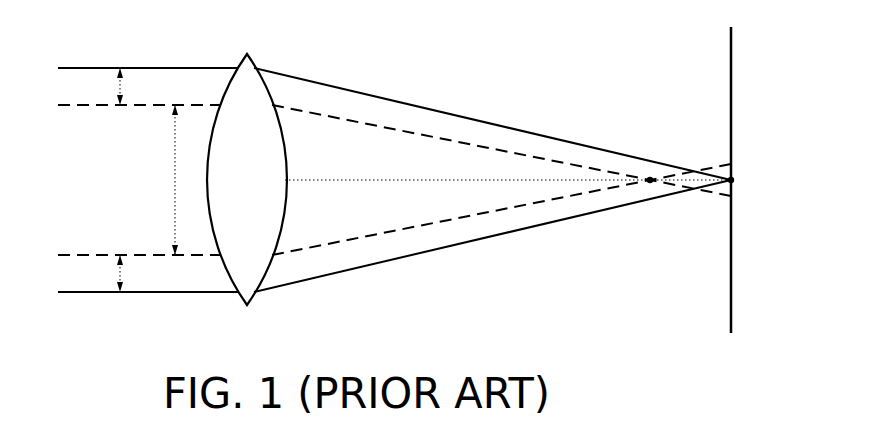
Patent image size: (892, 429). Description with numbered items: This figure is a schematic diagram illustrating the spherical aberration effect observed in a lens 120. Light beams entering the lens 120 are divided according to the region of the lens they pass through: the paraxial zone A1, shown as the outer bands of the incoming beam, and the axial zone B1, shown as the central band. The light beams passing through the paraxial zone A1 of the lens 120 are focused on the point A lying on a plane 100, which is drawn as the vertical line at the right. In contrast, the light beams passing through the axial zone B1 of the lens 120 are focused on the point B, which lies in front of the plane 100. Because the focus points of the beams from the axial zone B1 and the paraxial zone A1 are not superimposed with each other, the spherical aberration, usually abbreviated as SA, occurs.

The plane 100 is at (731, 255).
The lens 120 is at (252, 293).
The point A is at (735, 182).
The point B is at (653, 183).
The paraxial zone A1 is at (100, 180).
The axial zone B1 is at (159, 180).